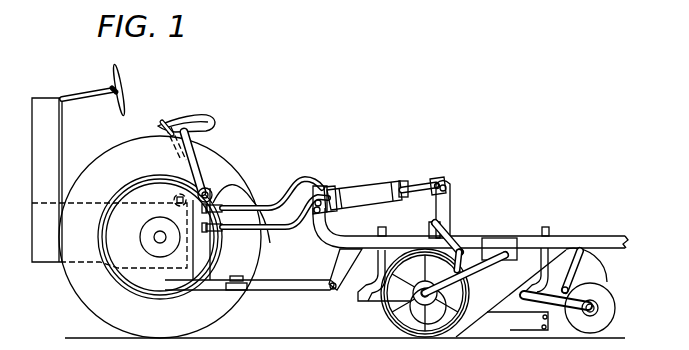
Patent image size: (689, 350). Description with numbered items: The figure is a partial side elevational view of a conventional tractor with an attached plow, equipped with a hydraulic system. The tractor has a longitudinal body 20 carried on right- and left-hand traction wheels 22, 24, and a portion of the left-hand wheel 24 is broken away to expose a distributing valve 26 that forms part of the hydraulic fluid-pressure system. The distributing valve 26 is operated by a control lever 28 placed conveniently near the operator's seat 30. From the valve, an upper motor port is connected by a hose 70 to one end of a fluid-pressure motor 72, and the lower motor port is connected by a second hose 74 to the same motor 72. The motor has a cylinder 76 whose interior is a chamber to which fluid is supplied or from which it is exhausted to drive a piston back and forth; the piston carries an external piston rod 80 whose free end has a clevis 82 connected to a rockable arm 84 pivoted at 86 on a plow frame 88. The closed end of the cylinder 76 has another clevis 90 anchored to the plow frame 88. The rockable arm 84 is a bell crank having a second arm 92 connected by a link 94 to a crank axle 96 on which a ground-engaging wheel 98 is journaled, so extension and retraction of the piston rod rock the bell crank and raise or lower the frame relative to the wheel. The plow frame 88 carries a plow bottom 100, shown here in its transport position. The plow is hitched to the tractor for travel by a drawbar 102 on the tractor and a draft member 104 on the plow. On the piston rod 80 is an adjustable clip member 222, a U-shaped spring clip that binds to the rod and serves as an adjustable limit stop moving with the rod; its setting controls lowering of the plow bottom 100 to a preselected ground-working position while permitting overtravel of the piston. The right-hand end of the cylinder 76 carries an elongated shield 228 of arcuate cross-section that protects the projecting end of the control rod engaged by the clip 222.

The longitudinal body 20 is at (43, 258).
The right-hand traction wheel 22 is at (210, 152).
The left-hand traction wheel 24 is at (110, 150).
The distributing valve 26 is at (220, 206).
The control lever 28 is at (162, 119).
The operator's seat 30 is at (208, 117).
The hose 70 is at (262, 198).
The fluid-pressure motor 72 is at (388, 179).
The hose 74 is at (268, 232).
The cylinder 76 is at (338, 191).
The piston rod 80 is at (420, 194).
The clevis 82 is at (444, 186).
The rockable arm 84 is at (448, 205).
The pivot 86 is at (438, 223).
The plow frame 88 is at (536, 242).
The clevis 90 is at (312, 210).
The second arm 92 is at (458, 235).
The link 94 is at (480, 270).
The crank axle 96 is at (466, 277).
The ground-engaging wheel 98 is at (385, 314).
The plow bottom 100 is at (600, 273).
The drawbar 102 is at (213, 286).
The draft member 104 is at (302, 288).
The adjustable clip member 222 is at (432, 185).
The shield 228 is at (410, 180).